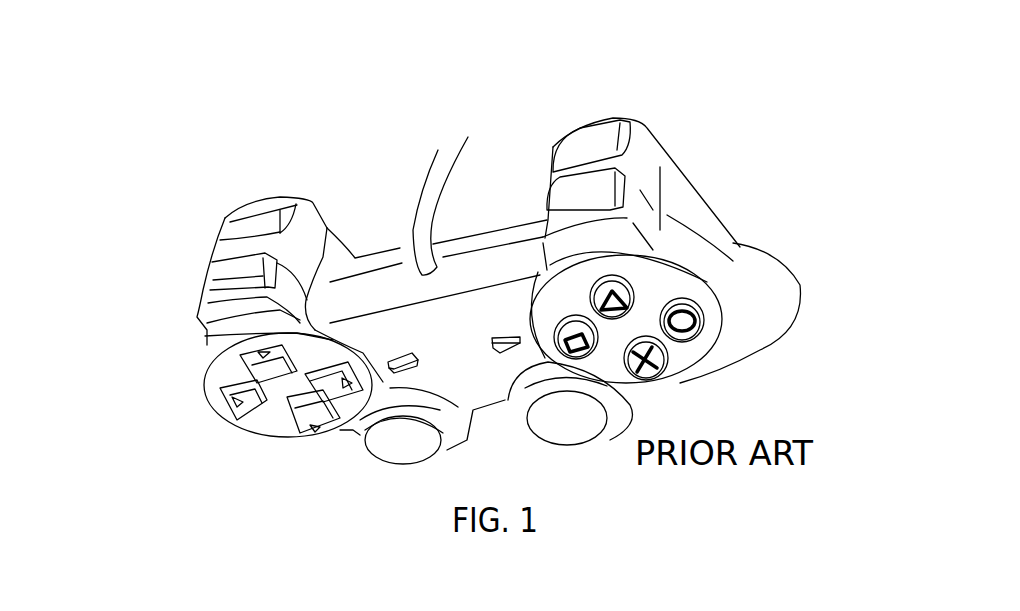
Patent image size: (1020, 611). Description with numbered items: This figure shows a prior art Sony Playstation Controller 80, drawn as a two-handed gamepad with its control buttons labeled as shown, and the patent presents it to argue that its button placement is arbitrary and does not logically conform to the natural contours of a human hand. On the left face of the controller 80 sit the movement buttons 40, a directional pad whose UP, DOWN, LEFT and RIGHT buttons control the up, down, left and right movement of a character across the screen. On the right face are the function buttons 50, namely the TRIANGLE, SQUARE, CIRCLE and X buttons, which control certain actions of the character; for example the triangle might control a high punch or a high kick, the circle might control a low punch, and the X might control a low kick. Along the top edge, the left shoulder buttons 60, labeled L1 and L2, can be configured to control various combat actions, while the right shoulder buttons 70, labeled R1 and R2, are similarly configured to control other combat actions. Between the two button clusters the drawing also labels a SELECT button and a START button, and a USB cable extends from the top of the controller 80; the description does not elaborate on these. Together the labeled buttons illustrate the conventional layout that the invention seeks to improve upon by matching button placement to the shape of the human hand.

The Sony Playstation Controller 80 is at (172, 212).
The buttons (L1 and L2) 60 is at (195, 227).
The buttons (R1 and R2) 70 is at (699, 161).
The movement buttons 40 is at (206, 421).
The function buttons 50 is at (725, 330).
The L2 button L2 is at (215, 230).
The L1 button L1 is at (213, 282).
The R2 button R2 is at (618, 136).
The R1 button R1 is at (613, 190).
The up button UP is at (258, 370).
The down button DOWN is at (325, 421).
The left button LEFT is at (248, 392).
The right button RIGHT is at (335, 384).
The select button SELECT is at (399, 355).
The start button START is at (508, 337).
The USB cable USB is at (443, 125).
The triangle button TRIANGLE is at (633, 296).
The square button SQUARE is at (600, 336).
The circle button CIRCLE is at (702, 321).
The X button X is at (668, 359).